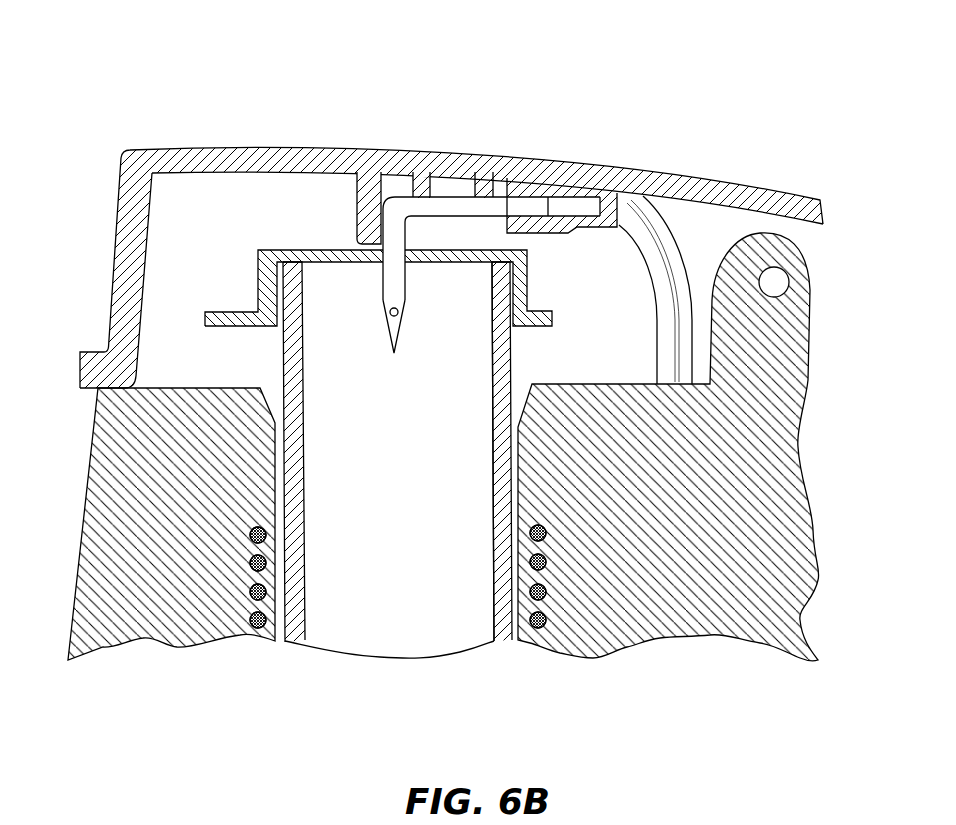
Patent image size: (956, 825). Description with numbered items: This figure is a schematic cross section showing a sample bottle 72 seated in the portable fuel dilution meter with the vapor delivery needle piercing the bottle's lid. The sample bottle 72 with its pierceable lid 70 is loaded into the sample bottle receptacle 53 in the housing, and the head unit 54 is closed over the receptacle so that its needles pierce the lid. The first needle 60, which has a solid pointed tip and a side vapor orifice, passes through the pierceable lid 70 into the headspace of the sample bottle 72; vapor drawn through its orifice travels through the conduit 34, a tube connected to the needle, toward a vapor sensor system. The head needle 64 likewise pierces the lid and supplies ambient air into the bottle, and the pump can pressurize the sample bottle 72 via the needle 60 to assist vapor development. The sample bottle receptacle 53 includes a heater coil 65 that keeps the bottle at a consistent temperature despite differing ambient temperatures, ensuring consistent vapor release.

The head unit 54 is at (204, 148).
The pierceable lid 70 is at (318, 248).
The first needle 60 is at (393, 283).
The head needle 64 is at (399, 314).
The conduit 34 is at (677, 242).
The sample bottle 72 is at (492, 425).
The heater coil 65 is at (252, 596).
The sample bottle receptacle 53 is at (283, 622).